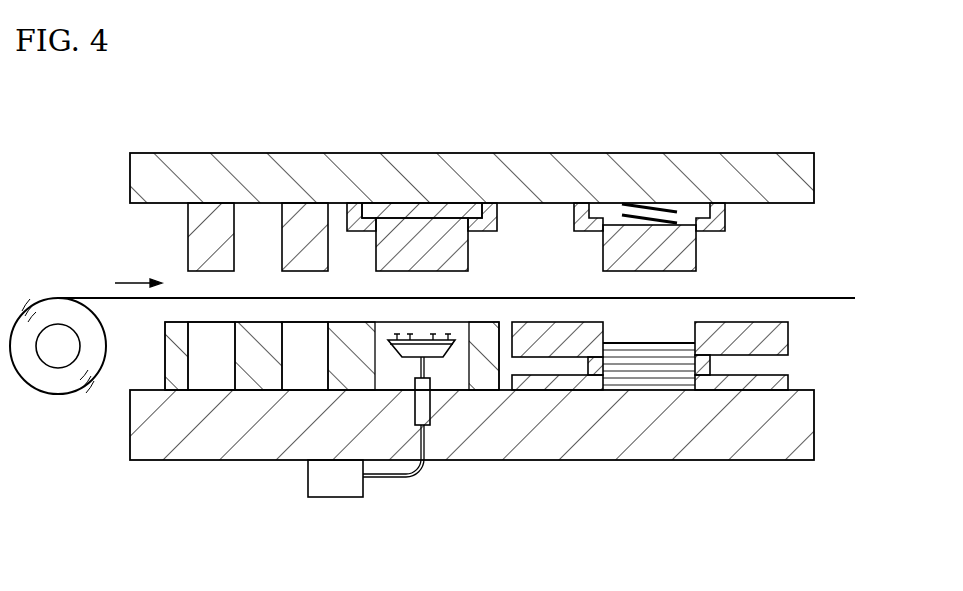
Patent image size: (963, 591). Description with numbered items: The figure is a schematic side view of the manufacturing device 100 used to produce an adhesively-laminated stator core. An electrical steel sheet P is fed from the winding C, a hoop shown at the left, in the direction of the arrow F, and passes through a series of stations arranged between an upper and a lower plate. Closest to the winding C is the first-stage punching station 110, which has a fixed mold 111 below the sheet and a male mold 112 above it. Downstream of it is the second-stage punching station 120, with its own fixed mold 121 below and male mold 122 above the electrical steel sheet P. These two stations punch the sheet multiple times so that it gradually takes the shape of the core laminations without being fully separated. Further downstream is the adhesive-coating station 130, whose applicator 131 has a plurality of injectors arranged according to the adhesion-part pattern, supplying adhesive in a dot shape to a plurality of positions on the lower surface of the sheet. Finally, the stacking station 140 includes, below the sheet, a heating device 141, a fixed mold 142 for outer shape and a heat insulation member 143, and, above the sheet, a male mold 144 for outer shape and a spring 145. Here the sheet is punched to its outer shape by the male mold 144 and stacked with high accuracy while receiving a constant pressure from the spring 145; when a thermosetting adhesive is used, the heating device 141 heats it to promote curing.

The manufacturing device 100 is at (529, 338).
The first-stage punching station 110 is at (225, 194).
The fixed mold 111 is at (188, 362).
The male mold 112 is at (230, 230).
The second-stage punching station 120 is at (319, 194).
The fixed mold 121 is at (282, 362).
The male mold 122 is at (323, 230).
The adhesive-coating station 130 is at (394, 459).
The applicator 131 is at (450, 354).
The stacking station 140 is at (681, 184).
The heating device 141 is at (712, 366).
The fixed mold for outer shape 142 is at (790, 338).
The heat insulation member 143 is at (545, 388).
The male mold for outer shape 144 is at (698, 249).
The spring 145 is at (664, 210).
The winding C is at (29, 384).
The electrical steel sheet P is at (97, 296).
The arrow F is at (133, 281).